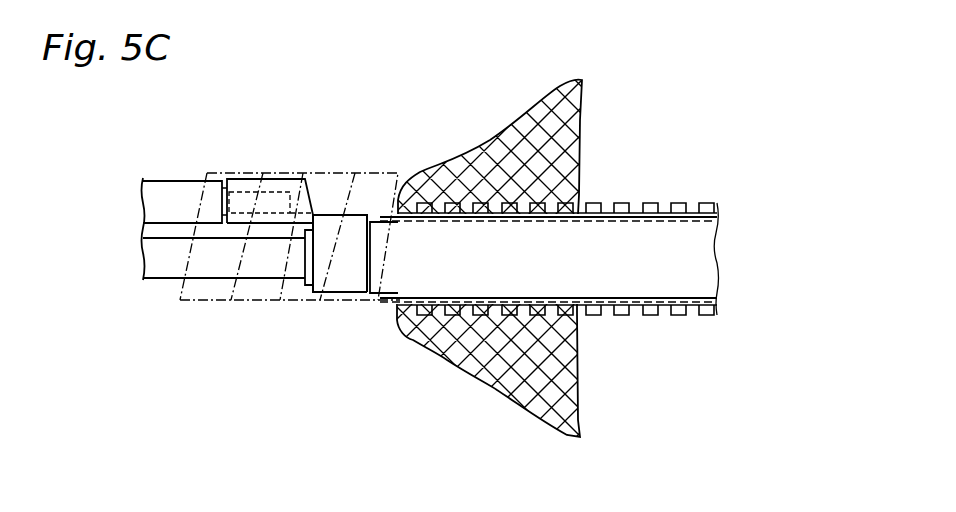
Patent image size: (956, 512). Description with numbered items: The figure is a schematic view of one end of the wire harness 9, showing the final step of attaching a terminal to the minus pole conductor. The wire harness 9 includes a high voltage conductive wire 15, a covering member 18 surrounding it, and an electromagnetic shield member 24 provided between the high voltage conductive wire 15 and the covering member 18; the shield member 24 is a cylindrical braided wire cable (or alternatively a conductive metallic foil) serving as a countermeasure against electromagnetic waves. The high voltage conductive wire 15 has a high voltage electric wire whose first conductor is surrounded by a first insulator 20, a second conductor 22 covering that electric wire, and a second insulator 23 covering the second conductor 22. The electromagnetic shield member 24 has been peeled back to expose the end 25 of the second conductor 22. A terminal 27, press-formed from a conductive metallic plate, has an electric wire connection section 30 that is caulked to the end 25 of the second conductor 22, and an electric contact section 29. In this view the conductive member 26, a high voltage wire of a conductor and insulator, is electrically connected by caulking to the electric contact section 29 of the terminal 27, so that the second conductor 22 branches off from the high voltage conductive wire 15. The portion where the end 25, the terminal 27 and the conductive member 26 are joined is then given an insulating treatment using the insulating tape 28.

The wire harness 9 is at (694, 153).
The high voltage conductive wire 15 is at (391, 163).
The covering member 18 is at (651, 204).
The first insulator 20 is at (157, 278).
The second conductor 22 is at (305, 258).
The second insulator 23 is at (398, 275).
The electromagnetic shield member 24 is at (483, 140).
The end of the second conductor 25 is at (343, 290).
The conductive member 26 is at (182, 194).
The terminal 27 is at (290, 165).
The insulating tape 28 is at (345, 300).
The electric contact section 29 is at (265, 187).
The electric wire connection section 30 is at (320, 292).